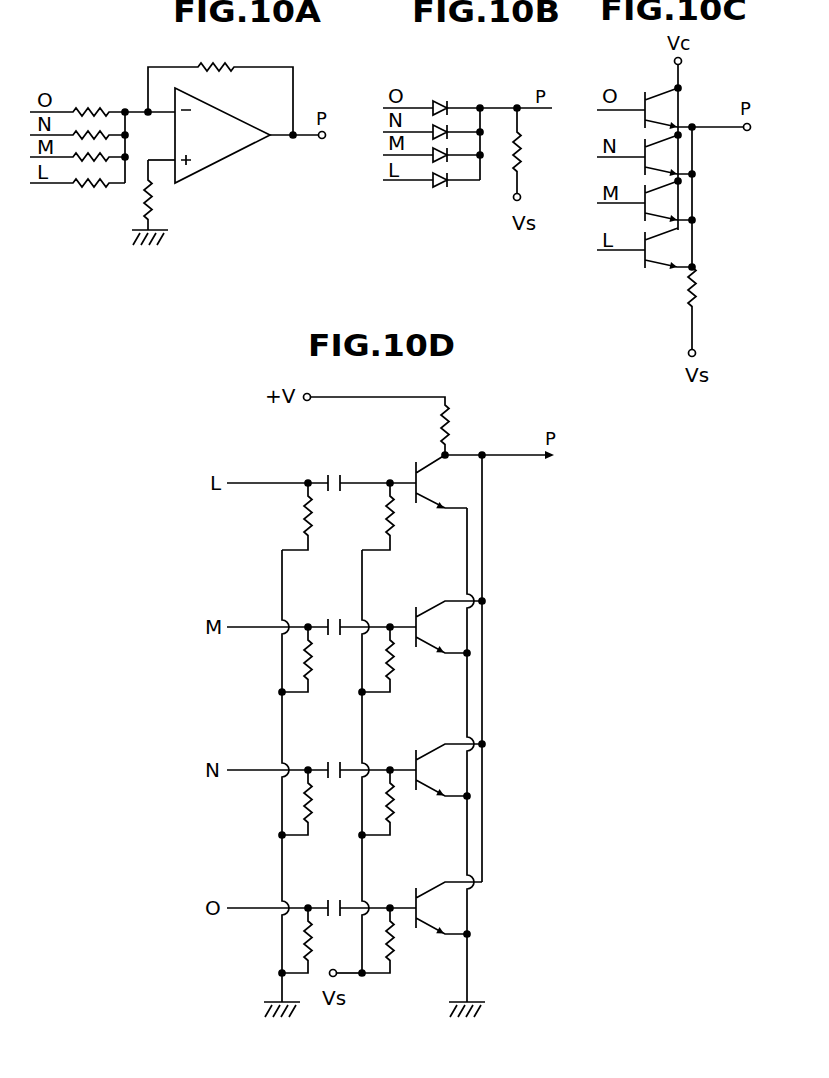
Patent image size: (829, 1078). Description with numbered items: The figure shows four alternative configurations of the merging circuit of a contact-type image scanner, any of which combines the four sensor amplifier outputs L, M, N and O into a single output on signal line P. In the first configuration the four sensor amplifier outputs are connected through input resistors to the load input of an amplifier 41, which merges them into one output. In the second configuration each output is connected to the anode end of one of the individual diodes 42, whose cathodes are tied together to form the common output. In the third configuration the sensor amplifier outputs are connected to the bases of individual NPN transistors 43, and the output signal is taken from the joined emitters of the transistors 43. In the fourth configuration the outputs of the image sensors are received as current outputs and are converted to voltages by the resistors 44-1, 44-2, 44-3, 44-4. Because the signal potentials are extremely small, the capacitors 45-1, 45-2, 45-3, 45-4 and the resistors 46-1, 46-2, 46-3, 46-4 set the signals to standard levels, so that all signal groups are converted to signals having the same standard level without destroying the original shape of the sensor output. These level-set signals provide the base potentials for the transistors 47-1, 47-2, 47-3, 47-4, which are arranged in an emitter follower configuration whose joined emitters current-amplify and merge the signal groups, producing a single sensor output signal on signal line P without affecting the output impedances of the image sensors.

In FIG. 10A, the amplifier 41 is at (236, 156).
In FIG. 10B, the diodes 42 is at (437, 100).
In FIG. 10C, the NPN transistors 43 is at (658, 92).
In FIG. 10D, the resistor 44-1 is at (321, 516).
In FIG. 10D, the resistor 44-2 is at (320, 659).
In FIG. 10D, the resistor 44-3 is at (320, 802).
In FIG. 10D, the resistor 44-4 is at (319, 940).
In FIG. 10D, the capacitor 45-1 is at (340, 474).
In FIG. 10D, the capacitor 45-2 is at (327, 619).
In FIG. 10D, the capacitor 45-3 is at (327, 763).
In FIG. 10D, the capacitor 45-4 is at (328, 900).
In FIG. 10D, the resistor 46-1 is at (401, 516).
In FIG. 10D, the resistor 46-2 is at (401, 659).
In FIG. 10D, the resistor 46-3 is at (401, 802).
In FIG. 10D, the resistor 46-4 is at (400, 940).
In FIG. 10D, the transistor 47-1 is at (418, 483).
In FIG. 10D, the transistor 47-2 is at (423, 617).
In FIG. 10D, the transistor 47-3 is at (420, 760).
In FIG. 10D, the transistor 47-4 is at (423, 900).